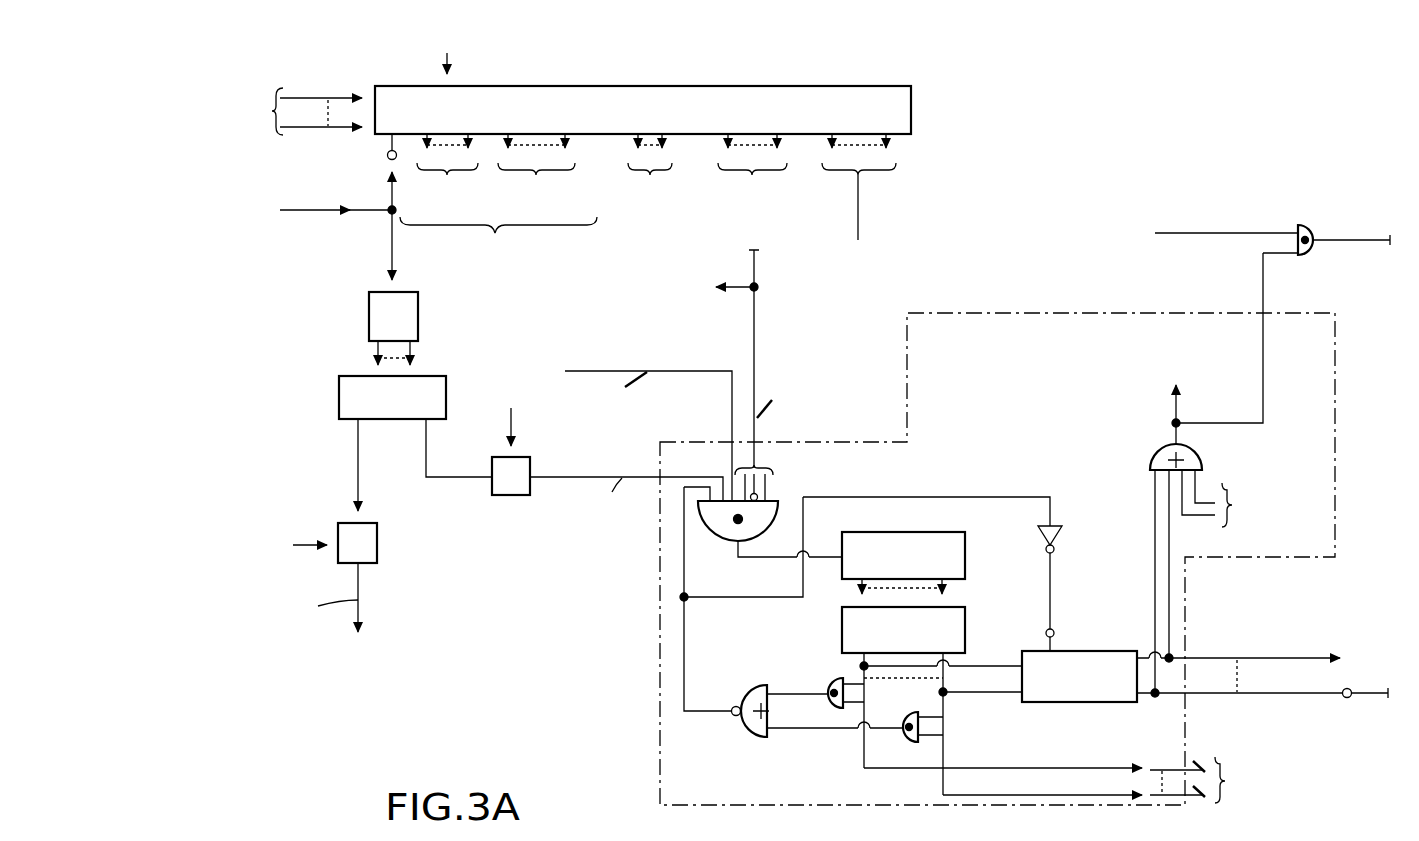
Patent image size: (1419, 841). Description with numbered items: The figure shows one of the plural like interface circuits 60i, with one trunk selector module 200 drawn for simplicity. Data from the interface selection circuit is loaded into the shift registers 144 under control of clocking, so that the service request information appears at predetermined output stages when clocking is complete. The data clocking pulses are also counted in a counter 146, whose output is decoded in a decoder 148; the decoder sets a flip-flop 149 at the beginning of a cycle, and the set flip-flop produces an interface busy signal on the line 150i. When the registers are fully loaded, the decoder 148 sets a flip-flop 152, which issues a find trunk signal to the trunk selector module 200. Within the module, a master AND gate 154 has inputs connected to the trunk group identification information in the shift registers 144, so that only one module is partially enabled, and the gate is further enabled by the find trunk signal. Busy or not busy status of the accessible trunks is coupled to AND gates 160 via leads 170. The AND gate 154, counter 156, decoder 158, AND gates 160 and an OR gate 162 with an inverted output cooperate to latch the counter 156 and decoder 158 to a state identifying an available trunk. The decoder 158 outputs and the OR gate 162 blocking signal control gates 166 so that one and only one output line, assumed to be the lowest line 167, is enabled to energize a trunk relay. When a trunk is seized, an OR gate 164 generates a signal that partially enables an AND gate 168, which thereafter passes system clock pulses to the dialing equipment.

The interface circuit 60i is at (560, 762).
The shift registers 144 is at (760, 82).
The counter 146 is at (369, 318).
The decoder 148 is at (339, 400).
The flip-flop 149 is at (377, 538).
The line 150i is at (358, 585).
The flip-flop 152 is at (546, 447).
The master AND gate 154 is at (722, 536).
The counter 156 is at (965, 540).
The decoder 158 is at (965, 612).
The AND gates 160 is at (920, 708).
The OR gate 162 is at (758, 739).
The OR gate 164 is at (1148, 460).
The gates 166 is at (1128, 636).
The output line 167 is at (1371, 690).
The AND gate 168 is at (1308, 229).
The leads 170 is at (1123, 781).
The trunk selector module 200 is at (660, 628).